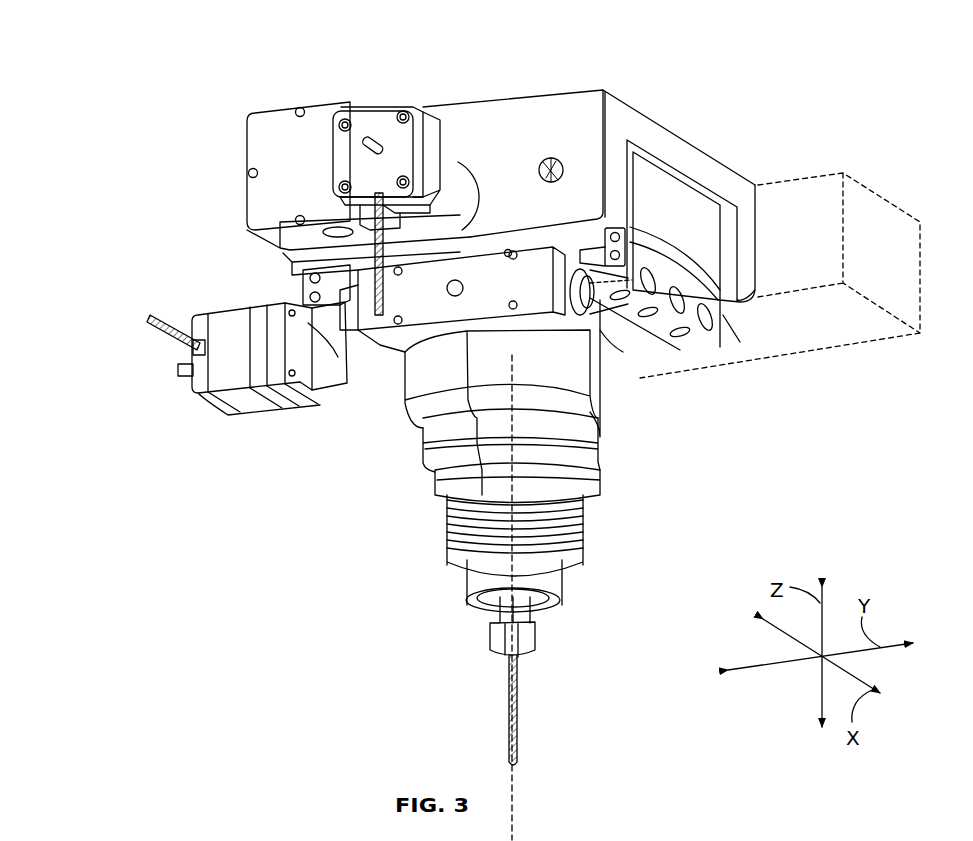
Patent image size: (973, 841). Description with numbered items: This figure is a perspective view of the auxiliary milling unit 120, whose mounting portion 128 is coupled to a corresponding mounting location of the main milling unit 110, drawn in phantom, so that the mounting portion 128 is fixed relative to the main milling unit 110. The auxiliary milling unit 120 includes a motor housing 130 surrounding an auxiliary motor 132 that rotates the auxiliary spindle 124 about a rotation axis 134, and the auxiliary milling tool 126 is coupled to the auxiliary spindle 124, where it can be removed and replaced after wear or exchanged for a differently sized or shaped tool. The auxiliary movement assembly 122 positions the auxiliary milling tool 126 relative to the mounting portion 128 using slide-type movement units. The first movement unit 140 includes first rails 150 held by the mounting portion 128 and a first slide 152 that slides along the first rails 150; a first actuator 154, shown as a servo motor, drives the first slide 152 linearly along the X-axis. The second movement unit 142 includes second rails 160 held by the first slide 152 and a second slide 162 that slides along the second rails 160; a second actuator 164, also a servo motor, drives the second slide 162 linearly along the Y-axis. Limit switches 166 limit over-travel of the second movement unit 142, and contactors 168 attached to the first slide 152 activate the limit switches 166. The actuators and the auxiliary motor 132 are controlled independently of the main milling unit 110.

The main milling unit 110 is at (873, 180).
The auxiliary milling unit 120 is at (718, 110).
The auxiliary movement assembly 122 is at (185, 265).
The auxiliary spindle 124 is at (535, 632).
The auxiliary milling tool 126 is at (518, 695).
The mounting portion 128 is at (618, 120).
The motor housing 130 is at (607, 387).
The auxiliary motor 132 is at (587, 506).
The rotation axis 134 is at (520, 805).
The first movement unit 140 is at (690, 228).
The second movement unit 142 is at (183, 382).
The first rails 150 is at (548, 158).
The first slide 152 is at (660, 195).
The first actuator 154 is at (430, 140).
The second rails 160 is at (693, 340).
The second slide 162 is at (615, 332).
The second actuator 164 is at (253, 405).
The limit switches 166 is at (605, 410).
The contactors 168 is at (333, 292).